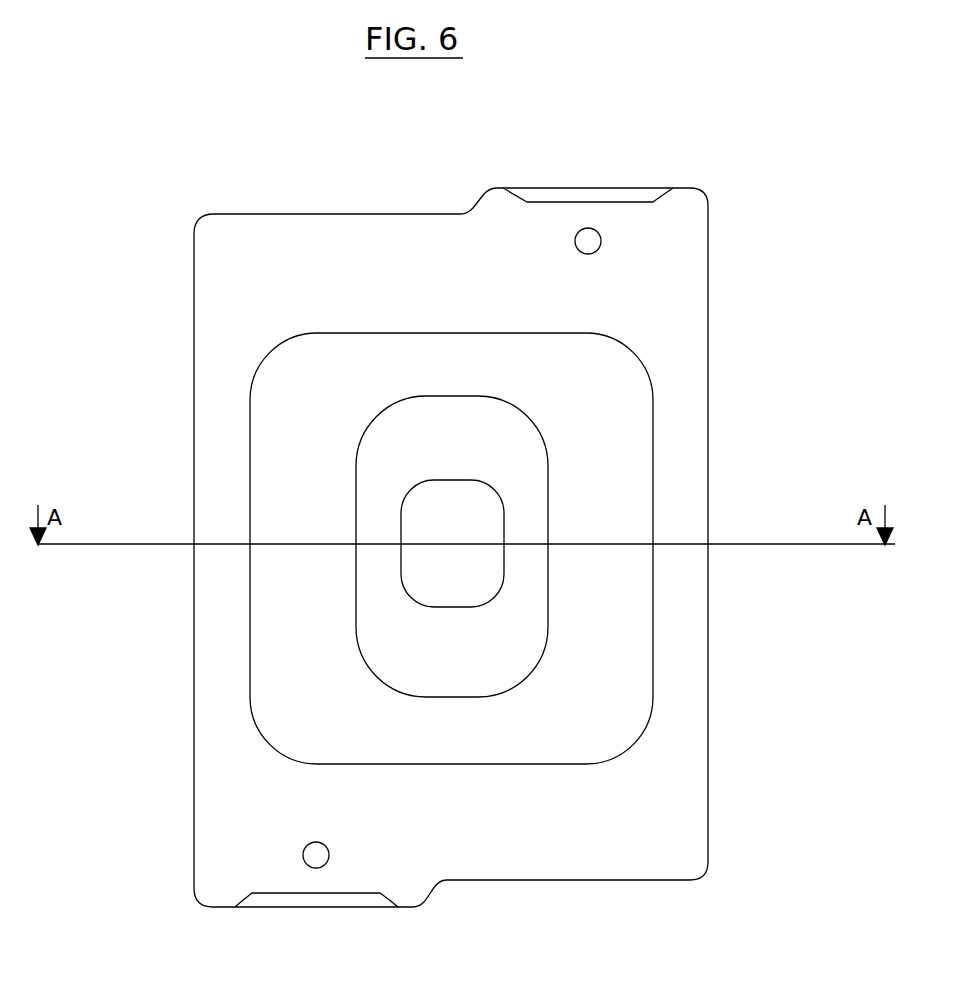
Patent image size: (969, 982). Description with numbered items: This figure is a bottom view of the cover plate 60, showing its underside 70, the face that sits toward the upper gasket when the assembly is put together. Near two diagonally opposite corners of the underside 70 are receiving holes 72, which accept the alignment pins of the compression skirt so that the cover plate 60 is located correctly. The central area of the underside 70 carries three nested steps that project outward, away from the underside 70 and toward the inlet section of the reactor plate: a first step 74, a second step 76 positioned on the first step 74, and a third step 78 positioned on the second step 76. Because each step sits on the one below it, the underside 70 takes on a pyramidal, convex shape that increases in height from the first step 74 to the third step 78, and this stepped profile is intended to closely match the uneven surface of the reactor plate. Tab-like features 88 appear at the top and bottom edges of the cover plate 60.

The cover plate 60 is at (260, 204).
The underside 70 is at (683, 289).
The receiving holes 72 is at (576, 236).
The first step 74 is at (616, 638).
The second step 76 is at (522, 446).
The third step 78 is at (423, 560).
The tabs 88 is at (612, 190).